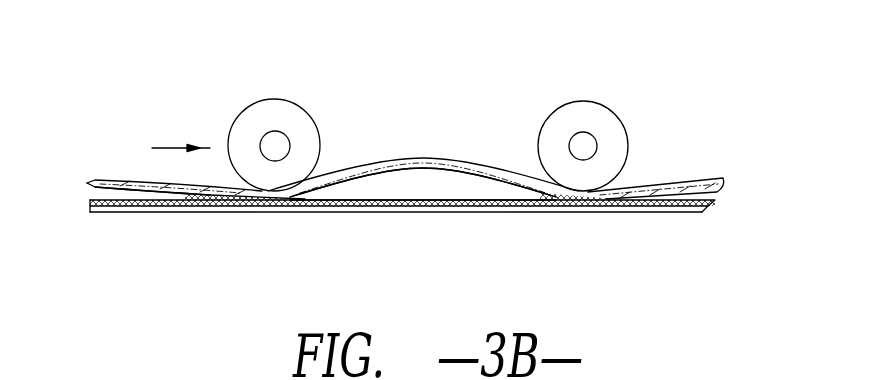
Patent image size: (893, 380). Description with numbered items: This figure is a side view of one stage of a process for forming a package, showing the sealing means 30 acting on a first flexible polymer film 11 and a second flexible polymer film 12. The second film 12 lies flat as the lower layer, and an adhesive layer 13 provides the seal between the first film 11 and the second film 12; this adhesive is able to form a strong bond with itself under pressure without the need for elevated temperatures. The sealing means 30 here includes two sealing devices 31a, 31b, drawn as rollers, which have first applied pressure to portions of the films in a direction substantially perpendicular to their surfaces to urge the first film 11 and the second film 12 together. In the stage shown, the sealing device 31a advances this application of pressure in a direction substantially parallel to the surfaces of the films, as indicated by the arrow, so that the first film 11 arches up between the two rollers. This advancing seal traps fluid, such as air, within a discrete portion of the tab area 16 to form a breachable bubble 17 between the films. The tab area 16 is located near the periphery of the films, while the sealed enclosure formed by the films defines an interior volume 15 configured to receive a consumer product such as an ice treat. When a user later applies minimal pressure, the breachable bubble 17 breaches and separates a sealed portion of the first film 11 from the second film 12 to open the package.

The sealing means 30 is at (128, 80).
The sealing device 31a is at (316, 122).
The sealing device 31b is at (628, 130).
The tab area 16 is at (420, 160).
The breachable bubble 17 is at (425, 188).
The first flexible polymer film 11 is at (723, 183).
The interior volume 15 is at (112, 195).
The adhesive layer 13 is at (717, 192).
The second flexible polymer film 12 is at (707, 208).